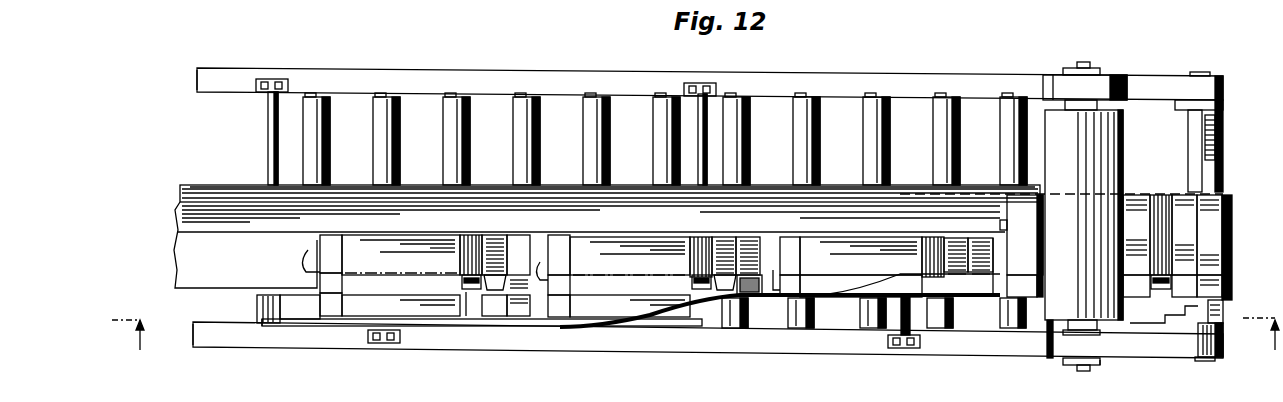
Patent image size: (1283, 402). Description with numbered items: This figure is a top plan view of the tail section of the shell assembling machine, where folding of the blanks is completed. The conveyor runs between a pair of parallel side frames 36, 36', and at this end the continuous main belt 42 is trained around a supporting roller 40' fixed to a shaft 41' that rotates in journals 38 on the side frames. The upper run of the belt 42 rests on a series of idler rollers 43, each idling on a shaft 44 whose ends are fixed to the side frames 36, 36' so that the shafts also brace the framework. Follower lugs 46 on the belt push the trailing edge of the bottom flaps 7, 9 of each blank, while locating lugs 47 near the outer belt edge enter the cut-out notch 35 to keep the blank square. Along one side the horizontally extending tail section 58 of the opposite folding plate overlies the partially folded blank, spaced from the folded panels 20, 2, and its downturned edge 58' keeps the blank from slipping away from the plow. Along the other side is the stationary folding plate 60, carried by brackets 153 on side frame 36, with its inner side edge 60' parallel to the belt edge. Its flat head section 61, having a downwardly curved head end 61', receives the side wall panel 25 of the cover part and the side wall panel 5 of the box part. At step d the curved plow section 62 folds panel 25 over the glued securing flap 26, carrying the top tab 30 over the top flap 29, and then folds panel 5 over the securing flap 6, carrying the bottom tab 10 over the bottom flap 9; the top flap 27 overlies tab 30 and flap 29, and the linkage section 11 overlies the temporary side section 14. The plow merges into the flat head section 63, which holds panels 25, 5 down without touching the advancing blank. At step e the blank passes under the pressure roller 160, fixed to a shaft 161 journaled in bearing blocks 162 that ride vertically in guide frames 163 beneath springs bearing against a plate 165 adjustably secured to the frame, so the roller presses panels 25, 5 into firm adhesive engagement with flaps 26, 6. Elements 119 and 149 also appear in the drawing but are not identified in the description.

The panel 2 is at (746, 235).
The side wall panel of the box part 5 is at (746, 296).
The securing flap 6 is at (410, 283).
The bottom flap 7 is at (681, 246).
The bottom flap 9 is at (445, 284).
The bottom tab 10 is at (678, 296).
The linkage section 11 is at (462, 253).
The temporary side section 14 is at (695, 344).
The panel 20 is at (957, 222).
The side wall panel of the cover part 25 is at (497, 318).
The securing flap 26 is at (495, 292).
The top flap 27 is at (982, 222).
The top flap 29 is at (752, 297).
The top tab 30 is at (520, 318).
The cut-out notch 35 is at (466, 318).
The side frame 36 is at (708, 350).
The side frame 36' is at (710, 68).
The journals 38 is at (1224, 103).
The supporting roller 40' is at (1200, 259).
The shaft 41' is at (1219, 372).
The main belt 42 is at (183, 247).
The idler rollers 43 is at (330, 137).
The shaft 44 is at (802, 97).
The follower lugs 46 is at (806, 261).
The locating lugs 47 is at (470, 292).
The tail section 58 is at (610, 175).
The downturned edge 58' is at (612, 169).
The folding plate 60 is at (482, 353).
The inner side edge 60' is at (285, 289).
The head section 61 is at (251, 350).
The head end 61' is at (247, 308).
The plow section 62 is at (640, 330).
The head section 63 is at (975, 297).
The step d is at (848, 305).
The step e is at (1180, 53).
The post 119 is at (1218, 170).
The hanger 149 is at (283, 96).
The brackets 153 is at (383, 344).
The pressure roller 160 is at (1100, 135).
The shaft 161 is at (1082, 372).
The bearing blocks 162 is at (1100, 366).
The guide frame 163 is at (1047, 350).
The plate 165 is at (1100, 80).